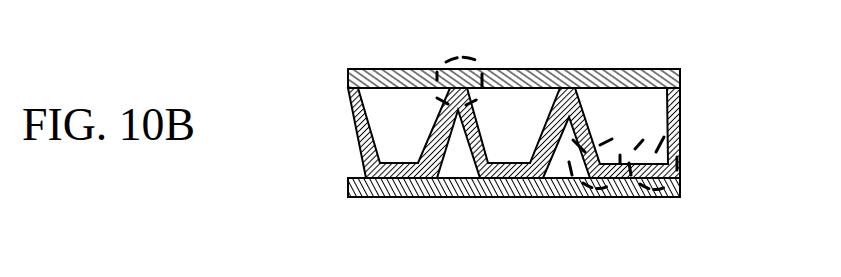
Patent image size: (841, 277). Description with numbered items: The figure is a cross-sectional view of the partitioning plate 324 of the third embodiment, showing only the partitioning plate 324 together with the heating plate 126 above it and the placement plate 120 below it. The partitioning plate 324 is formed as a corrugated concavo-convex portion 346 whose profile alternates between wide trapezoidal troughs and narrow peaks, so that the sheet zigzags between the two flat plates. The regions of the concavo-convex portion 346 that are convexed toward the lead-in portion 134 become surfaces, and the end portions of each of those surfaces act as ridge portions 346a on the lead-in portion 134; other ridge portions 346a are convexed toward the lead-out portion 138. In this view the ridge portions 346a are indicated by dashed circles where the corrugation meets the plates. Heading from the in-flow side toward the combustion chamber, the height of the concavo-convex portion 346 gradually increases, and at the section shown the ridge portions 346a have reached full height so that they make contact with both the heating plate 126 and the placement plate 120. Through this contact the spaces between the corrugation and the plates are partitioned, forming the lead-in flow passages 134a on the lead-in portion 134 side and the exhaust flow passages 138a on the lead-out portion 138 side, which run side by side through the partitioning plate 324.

The concavo-convex portion 346 is at (368, 122).
The partitioning plate 324 is at (481, 95).
The ridge portions 346a is at (447, 54).
The lead-out portion 138 is at (524, 114).
The exhaust flow passages 138a is at (531, 88).
The lead-in portion 134 is at (461, 155).
The lead-in flow passages 134a is at (502, 179).
The heating plate 126 is at (680, 83).
The placement plate 120 is at (680, 192).